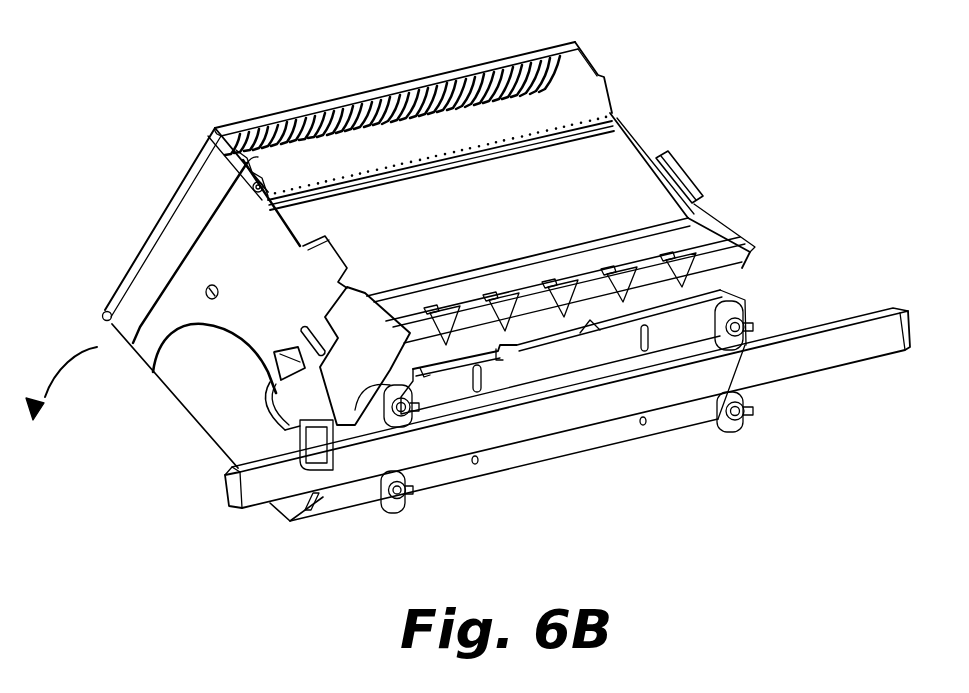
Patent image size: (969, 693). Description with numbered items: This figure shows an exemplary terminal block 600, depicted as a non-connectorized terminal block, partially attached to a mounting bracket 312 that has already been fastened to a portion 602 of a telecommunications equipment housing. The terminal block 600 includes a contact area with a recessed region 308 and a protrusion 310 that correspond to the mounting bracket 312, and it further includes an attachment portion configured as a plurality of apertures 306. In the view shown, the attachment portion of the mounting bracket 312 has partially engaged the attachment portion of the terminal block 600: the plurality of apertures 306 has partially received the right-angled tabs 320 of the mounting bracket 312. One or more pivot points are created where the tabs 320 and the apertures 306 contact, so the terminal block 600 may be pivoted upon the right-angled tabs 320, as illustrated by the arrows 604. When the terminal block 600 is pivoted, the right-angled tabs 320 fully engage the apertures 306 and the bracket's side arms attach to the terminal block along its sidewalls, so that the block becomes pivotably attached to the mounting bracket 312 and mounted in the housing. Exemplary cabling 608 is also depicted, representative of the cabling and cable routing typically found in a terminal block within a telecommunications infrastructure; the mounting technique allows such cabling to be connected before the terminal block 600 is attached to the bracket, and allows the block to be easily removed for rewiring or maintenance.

The terminal block 600 is at (172, 62).
The cabling 608 is at (542, 303).
The apertures 306 is at (714, 314).
The right-angled tabs 320 is at (722, 298).
The portion of telecommunications equipment housing 602 is at (808, 368).
The mounting bracket 312 is at (548, 464).
The protrusion 310 is at (282, 377).
The recessed region 308 is at (297, 383).
The arrows 604 is at (85, 395).